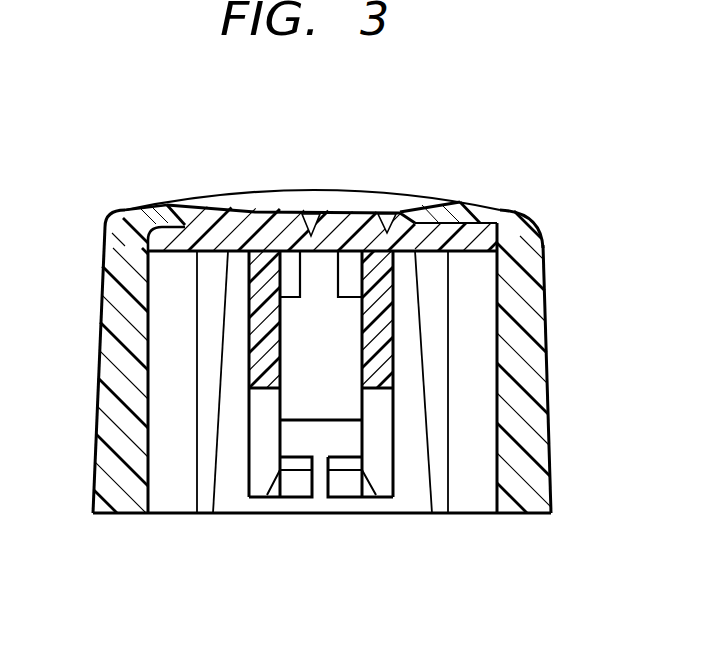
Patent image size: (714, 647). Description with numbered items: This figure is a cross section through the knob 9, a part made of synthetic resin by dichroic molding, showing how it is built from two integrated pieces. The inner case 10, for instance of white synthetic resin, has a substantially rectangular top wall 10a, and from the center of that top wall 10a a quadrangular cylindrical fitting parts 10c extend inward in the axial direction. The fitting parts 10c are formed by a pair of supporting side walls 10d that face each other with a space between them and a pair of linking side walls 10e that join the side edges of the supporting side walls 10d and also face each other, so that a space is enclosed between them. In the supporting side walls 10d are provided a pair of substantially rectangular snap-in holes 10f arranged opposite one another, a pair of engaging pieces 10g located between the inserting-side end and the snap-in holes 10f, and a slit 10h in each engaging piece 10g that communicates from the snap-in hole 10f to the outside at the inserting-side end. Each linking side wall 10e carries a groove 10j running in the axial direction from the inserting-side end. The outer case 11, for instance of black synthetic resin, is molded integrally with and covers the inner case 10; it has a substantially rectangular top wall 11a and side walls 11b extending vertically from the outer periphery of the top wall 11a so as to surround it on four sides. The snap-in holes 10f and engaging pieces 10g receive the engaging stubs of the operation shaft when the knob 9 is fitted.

The knob 9 is at (567, 213).
The inner case 10 is at (465, 252).
The top wall 10a is at (166, 235).
The fitting parts 10c is at (248, 337).
The supporting side walls 10d is at (348, 333).
The linking side walls 10e is at (252, 384).
The snap-in holes 10f is at (355, 433).
The engaging pieces 10g is at (297, 468).
The slit 10h is at (322, 490).
The groove 10j is at (258, 438).
The outer case 11 is at (498, 204).
The top wall 11a is at (437, 203).
The side walls 11b is at (537, 467).